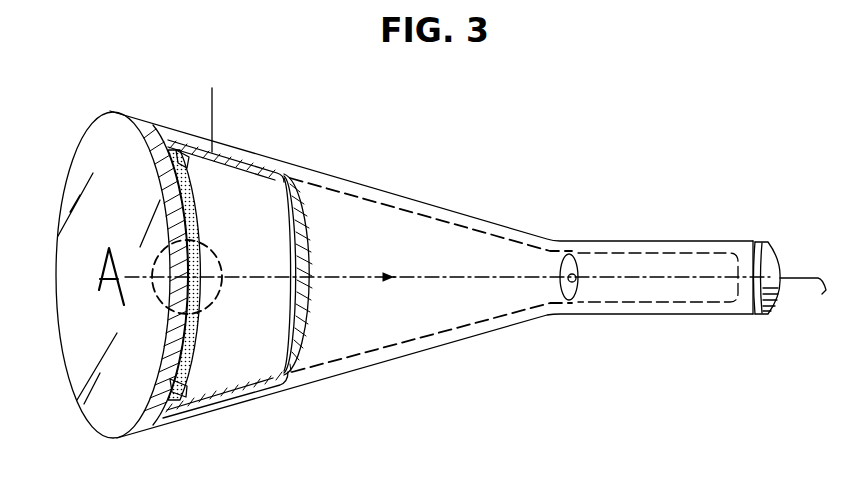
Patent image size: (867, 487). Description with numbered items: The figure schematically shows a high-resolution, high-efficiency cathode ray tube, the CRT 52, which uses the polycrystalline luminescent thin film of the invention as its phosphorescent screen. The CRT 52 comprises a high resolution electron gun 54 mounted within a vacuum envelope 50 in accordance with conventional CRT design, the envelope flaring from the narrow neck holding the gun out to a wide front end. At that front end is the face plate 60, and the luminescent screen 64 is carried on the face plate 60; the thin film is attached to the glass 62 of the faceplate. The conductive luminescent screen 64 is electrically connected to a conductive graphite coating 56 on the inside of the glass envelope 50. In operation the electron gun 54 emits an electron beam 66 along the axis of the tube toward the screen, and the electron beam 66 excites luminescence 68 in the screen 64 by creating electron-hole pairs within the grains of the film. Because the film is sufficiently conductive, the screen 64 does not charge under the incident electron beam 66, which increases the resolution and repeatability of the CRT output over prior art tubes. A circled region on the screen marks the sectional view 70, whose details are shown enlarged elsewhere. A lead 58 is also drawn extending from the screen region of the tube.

The vacuum envelope 50 is at (445, 210).
The CRT 52 is at (562, 228).
The high resolution electron gun 54 is at (641, 303).
The conductive graphite coating 56 is at (328, 370).
The reflector wall 58 is at (213, 78).
The face plate 60 is at (82, 158).
The glass 62 is at (145, 128).
The luminescent screen 64 is at (202, 348).
The electron beam 66 is at (369, 274).
The luminescence 68 is at (100, 289).
The sectional view 70 is at (222, 260).